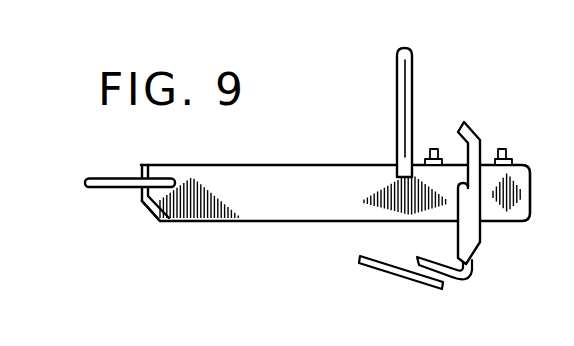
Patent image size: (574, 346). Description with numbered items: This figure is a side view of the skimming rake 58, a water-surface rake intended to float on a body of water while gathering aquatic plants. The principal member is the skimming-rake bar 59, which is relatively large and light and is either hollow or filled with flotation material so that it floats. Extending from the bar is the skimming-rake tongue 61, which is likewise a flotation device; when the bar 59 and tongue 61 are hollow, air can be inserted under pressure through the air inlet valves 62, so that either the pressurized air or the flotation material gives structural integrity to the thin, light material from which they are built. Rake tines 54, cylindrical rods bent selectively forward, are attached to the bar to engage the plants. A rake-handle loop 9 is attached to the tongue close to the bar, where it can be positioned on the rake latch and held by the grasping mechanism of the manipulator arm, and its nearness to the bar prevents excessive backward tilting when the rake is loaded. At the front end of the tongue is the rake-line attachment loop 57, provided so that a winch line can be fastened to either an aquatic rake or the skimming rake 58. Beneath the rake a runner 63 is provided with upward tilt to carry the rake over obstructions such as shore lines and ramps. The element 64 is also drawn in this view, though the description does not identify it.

The rake-handle loop 9 is at (398, 90).
The rake tines 54 is at (484, 159).
The rake-line attachment loop 57 is at (105, 178).
The skimming rake 58 is at (313, 110).
The skimming-rake bar 59 is at (515, 212).
The skimming-rake tongue 61 is at (257, 200).
The air inlet valves 62 is at (440, 161).
The runner 63 is at (380, 271).
The lip flange 64 is at (150, 217).